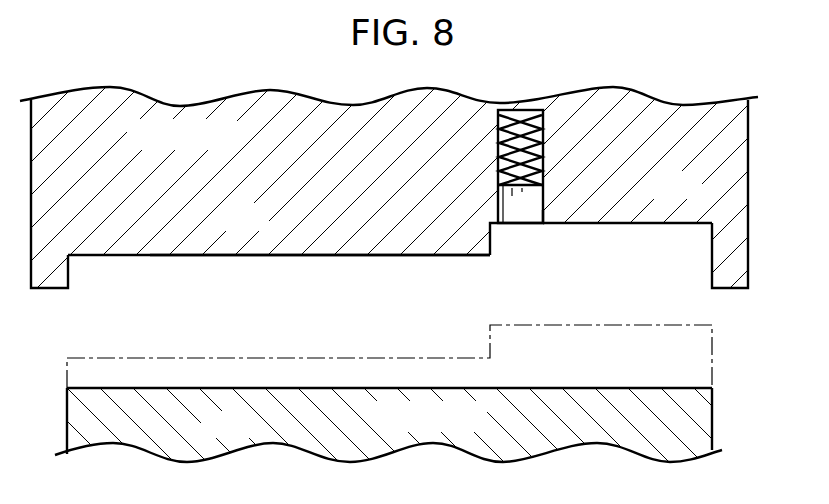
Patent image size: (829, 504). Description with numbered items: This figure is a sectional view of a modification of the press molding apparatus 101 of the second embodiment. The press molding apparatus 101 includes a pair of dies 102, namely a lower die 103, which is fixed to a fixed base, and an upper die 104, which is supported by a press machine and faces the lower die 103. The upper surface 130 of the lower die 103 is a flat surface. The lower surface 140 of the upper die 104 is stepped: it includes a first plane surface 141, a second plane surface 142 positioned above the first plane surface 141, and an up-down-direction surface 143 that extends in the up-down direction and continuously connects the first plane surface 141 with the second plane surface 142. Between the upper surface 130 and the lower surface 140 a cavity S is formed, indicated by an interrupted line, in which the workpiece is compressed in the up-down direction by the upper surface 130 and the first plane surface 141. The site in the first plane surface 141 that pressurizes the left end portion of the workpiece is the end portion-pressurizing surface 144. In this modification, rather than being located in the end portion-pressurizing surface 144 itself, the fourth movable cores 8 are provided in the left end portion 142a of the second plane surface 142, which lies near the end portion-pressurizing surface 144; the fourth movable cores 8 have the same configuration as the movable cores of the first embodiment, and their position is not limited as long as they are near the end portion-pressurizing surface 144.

The fourth movable core 8 is at (521, 200).
The press molding apparatus 101 is at (751, 203).
The die 102 is at (414, 274).
The lower die 103 is at (480, 428).
The upper die 104 is at (414, 187).
The upper surface 130 is at (247, 388).
The lower surface 140 is at (178, 258).
The first plane surface 141 is at (226, 256).
The second plane surface 142 is at (659, 224).
The left end portion of the second plane surface 142a is at (536, 227).
The up-down-direction surface 143 is at (497, 240).
The end portion-pressurizing surface 144 is at (447, 257).
The cavity S is at (270, 357).